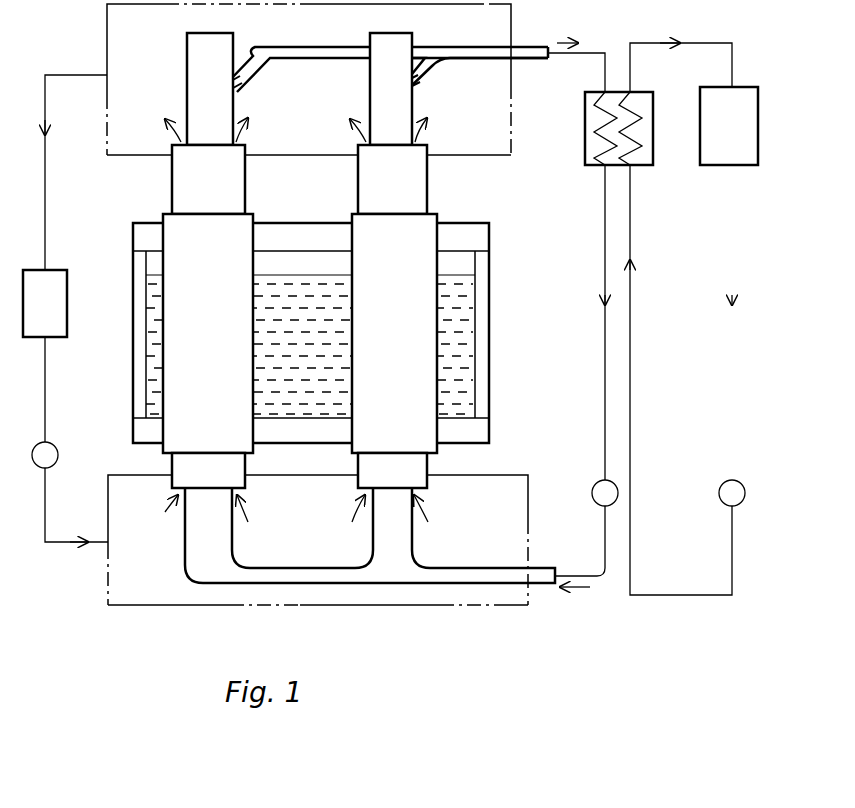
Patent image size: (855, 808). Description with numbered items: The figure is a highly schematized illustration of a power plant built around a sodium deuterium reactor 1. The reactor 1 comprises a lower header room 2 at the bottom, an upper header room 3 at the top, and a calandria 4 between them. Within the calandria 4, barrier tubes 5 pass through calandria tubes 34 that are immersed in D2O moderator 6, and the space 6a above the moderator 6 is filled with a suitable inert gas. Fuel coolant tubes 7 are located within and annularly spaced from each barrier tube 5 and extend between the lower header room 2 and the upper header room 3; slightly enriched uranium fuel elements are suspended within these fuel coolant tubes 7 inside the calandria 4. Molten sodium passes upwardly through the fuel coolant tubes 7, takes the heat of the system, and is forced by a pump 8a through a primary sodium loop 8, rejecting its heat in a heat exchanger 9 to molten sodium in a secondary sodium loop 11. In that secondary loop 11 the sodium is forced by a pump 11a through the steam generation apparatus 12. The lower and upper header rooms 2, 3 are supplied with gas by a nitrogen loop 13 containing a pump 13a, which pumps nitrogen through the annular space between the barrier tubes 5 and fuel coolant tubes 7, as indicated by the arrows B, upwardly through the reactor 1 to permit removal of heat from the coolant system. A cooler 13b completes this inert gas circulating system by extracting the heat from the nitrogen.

The sodium deuterium reactor 1 is at (338, 333).
The lower header room 2 is at (455, 607).
The upper header room 3 is at (512, 122).
The calandria 4 is at (309, 317).
The barrier tube 5 is at (430, 200).
The D2O moderator 6 is at (496, 401).
The space above moderator 6a is at (310, 262).
The fuel coolant tube 7 is at (410, 527).
The primary sodium loop 8 is at (590, 52).
The pump 8a is at (600, 506).
The heat exchanger 9 is at (650, 165).
The secondary sodium loop 11 is at (686, 43).
The pump 11a is at (728, 506).
The steam generation apparatus 12 is at (745, 165).
The nitrogen loop 13 is at (58, 544).
The pump 13a is at (56, 450).
The cooler 13b is at (67, 282).
The calandria tube 34 is at (505, 245).